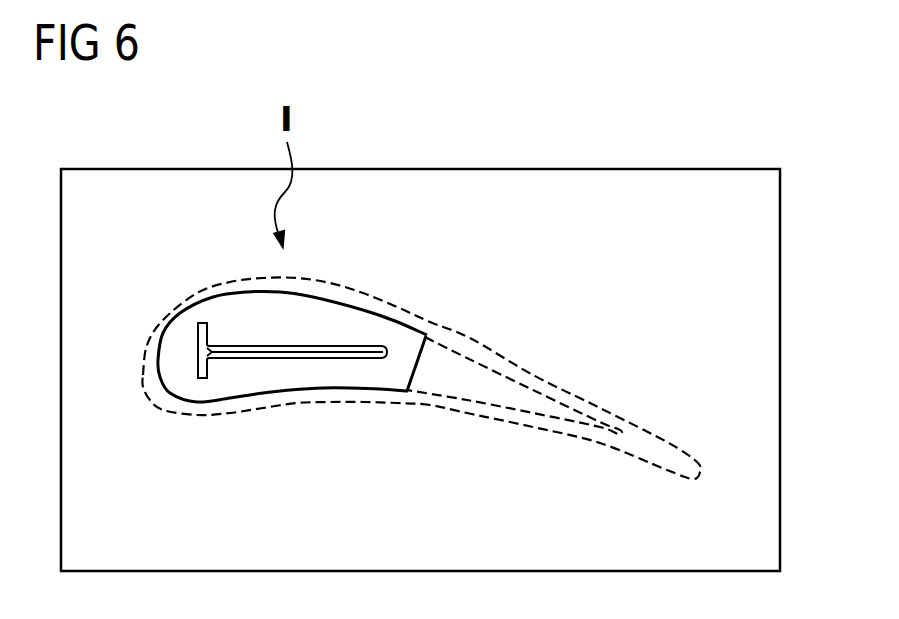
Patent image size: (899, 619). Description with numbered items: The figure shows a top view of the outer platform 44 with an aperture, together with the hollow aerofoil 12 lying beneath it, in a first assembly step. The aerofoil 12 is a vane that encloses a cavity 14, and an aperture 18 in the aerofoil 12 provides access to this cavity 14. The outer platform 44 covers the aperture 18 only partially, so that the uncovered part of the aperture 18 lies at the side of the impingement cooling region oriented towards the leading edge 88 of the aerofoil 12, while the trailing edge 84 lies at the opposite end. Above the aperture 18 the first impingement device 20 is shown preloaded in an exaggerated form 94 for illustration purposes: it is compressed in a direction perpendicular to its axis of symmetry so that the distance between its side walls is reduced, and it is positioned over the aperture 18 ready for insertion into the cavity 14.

The aerofoil 12 is at (213, 283).
The cavity 14 is at (460, 373).
The aperture 18 is at (330, 327).
The first impingement device 20 is at (280, 357).
The outer platform 44 is at (756, 235).
The trailing edge 84 is at (700, 478).
The leading edge 88 is at (145, 365).
The exaggerated form 94 is at (343, 360).